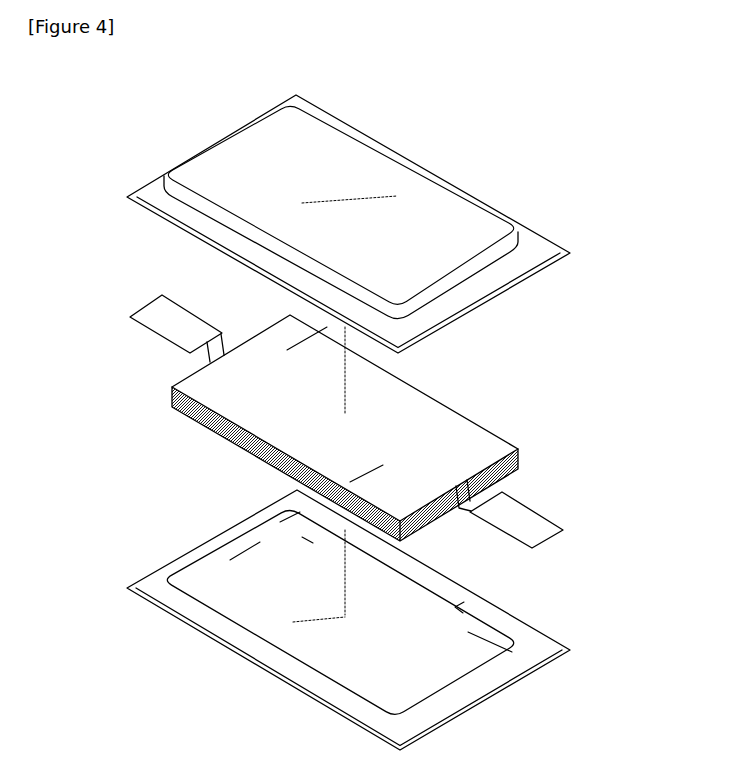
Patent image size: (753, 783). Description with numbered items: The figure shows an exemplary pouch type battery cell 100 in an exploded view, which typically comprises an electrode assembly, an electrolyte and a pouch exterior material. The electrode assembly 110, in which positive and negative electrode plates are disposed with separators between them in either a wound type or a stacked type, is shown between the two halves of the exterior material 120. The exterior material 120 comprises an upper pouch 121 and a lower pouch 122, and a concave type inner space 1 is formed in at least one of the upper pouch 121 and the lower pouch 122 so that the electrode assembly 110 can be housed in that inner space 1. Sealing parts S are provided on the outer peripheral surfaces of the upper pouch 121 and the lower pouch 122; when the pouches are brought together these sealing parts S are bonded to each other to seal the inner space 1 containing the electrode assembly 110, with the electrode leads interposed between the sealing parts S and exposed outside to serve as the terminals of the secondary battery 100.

The pouch type battery cell 100 is at (578, 427).
The electrode assembly 110 is at (462, 425).
The exterior material 120 is at (102, 381).
The upper pouch 121 is at (162, 206).
The lower pouch 122 is at (162, 572).
The sealing parts S is at (547, 245).
The inner space 1 is at (444, 199).